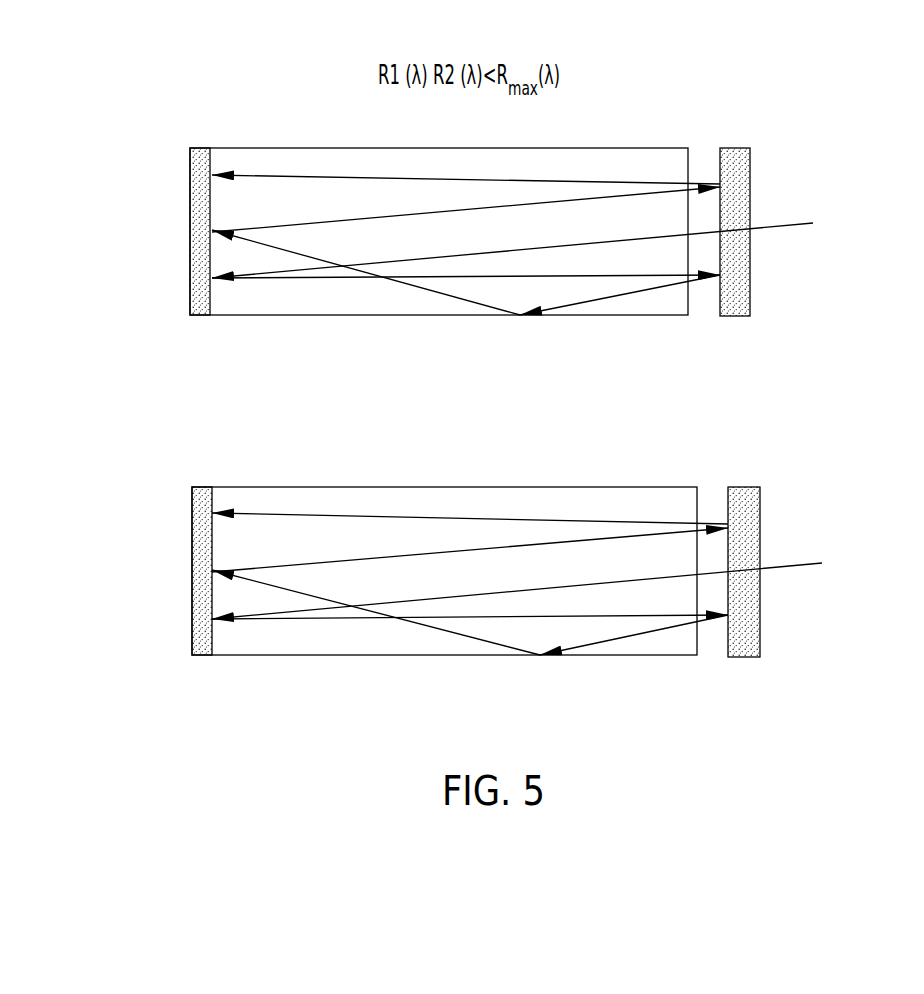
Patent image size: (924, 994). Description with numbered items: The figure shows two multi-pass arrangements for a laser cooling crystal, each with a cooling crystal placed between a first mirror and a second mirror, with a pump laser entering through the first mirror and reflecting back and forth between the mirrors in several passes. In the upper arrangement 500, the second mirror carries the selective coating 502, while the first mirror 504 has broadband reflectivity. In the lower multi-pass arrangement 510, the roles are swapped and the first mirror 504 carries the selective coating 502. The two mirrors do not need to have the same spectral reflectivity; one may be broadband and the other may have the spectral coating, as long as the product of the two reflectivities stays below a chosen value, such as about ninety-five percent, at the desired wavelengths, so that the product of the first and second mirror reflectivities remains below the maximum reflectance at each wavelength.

The laser cooling system (first configuration) 500 is at (145, 131).
The selective coating 502 is at (227, 119).
The first mirror 504 is at (755, 153).
The multi-pass arrangement 510 is at (190, 532).